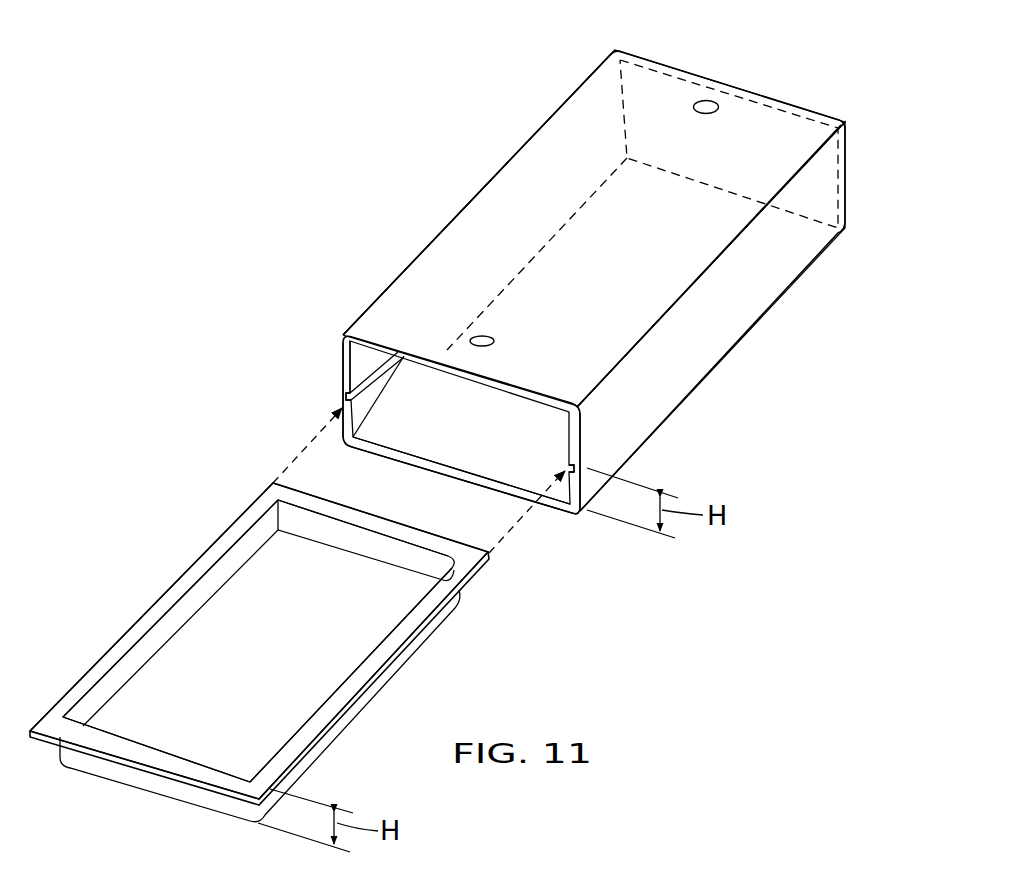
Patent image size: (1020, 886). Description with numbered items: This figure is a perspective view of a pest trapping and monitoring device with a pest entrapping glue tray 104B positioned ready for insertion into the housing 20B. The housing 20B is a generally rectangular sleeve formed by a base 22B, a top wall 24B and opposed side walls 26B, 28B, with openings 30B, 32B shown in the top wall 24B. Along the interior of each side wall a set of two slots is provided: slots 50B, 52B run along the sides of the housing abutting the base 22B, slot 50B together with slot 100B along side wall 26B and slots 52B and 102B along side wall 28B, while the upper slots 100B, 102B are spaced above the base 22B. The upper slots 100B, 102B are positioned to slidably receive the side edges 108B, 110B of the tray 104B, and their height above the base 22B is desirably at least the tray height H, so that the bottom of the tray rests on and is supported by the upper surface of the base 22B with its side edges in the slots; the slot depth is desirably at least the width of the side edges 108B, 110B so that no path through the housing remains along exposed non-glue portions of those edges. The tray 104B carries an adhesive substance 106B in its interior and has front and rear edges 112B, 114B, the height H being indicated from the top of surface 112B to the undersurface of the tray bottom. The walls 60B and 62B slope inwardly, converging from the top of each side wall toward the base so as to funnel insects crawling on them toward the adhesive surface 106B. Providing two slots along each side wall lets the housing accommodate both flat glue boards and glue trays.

The sleeve housing 20B is at (493, 123).
The base 22B is at (500, 470).
The top wall 24B is at (499, 212).
The side wall 26B is at (693, 367).
The side wall 28B is at (380, 296).
The aperture in top wall 30B is at (486, 338).
The aperture in top wall 32B is at (705, 108).
The slot 50B is at (575, 514).
The slot 52B is at (350, 442).
The wall 60B is at (565, 428).
The wall 62B is at (360, 358).
The upper slot 100B is at (566, 470).
The upper slot 102B is at (362, 393).
The pest trapping tray 104B is at (185, 552).
The adhesive substance 106B is at (313, 641).
The side edge 108B is at (352, 693).
The side edge 110B is at (112, 653).
The front edge 112B is at (170, 762).
The rear edge 114B is at (350, 512).